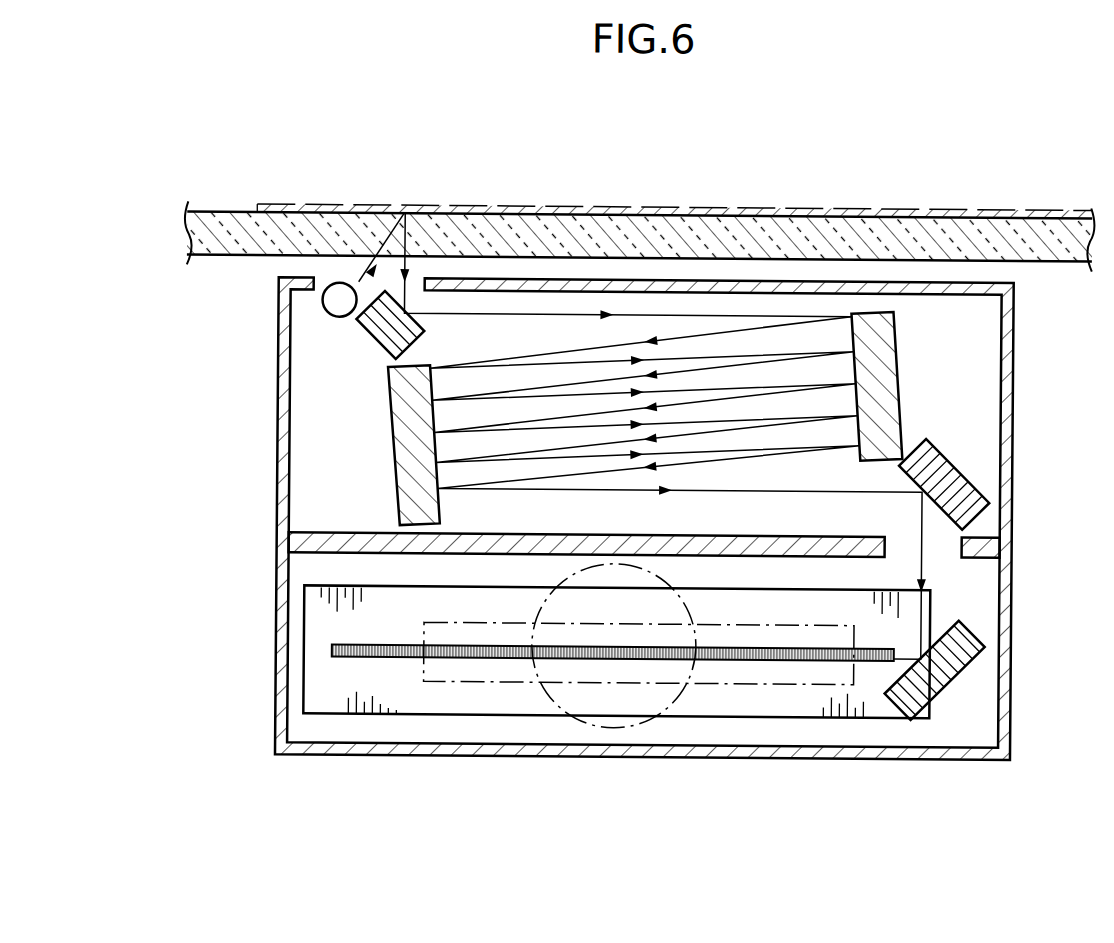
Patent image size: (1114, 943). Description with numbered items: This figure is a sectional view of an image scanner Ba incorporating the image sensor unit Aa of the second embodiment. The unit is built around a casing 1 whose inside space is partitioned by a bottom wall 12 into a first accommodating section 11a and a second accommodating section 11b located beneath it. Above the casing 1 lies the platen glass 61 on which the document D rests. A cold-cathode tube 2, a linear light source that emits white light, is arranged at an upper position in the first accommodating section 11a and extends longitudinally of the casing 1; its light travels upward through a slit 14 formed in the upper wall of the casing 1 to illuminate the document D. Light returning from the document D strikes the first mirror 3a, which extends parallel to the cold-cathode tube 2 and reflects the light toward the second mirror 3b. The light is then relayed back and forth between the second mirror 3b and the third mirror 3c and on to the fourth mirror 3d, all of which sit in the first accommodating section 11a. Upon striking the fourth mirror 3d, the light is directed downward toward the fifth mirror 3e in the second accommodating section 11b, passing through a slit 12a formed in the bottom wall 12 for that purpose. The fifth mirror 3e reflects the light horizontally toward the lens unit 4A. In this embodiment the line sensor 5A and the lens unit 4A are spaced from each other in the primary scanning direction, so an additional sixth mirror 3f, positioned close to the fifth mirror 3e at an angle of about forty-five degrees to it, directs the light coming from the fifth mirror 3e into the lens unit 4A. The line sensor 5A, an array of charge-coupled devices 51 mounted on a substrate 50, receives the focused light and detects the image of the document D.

The platen glass 61 is at (217, 235).
The document D is at (493, 213).
The image scanner Ba is at (305, 138).
The slit 14 is at (417, 282).
The cold-cathode tube 2 is at (322, 302).
The casing 1 is at (282, 390).
The first accommodating section 11a is at (968, 418).
The second accommodating section 11b is at (947, 730).
The first mirror 3a is at (375, 340).
The second mirror 3b is at (880, 368).
The third mirror 3c is at (407, 437).
The fourth mirror 3d is at (970, 495).
The fifth mirror 3e is at (965, 647).
The bottom wall 12 is at (560, 528).
The slit 12a is at (942, 553).
The substrate 50 is at (478, 716).
The image sensor 51 is at (433, 660).
The line sensor 5A is at (398, 663).
The lens unit 4A is at (648, 719).
The sixth mirror 3f is at (760, 677).
The image sensor unit Aa is at (240, 467).